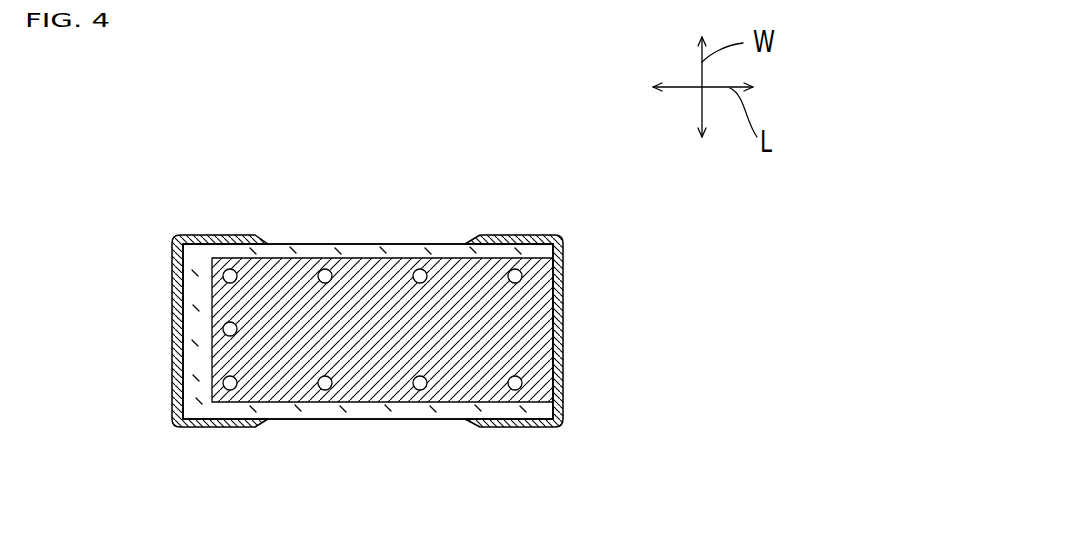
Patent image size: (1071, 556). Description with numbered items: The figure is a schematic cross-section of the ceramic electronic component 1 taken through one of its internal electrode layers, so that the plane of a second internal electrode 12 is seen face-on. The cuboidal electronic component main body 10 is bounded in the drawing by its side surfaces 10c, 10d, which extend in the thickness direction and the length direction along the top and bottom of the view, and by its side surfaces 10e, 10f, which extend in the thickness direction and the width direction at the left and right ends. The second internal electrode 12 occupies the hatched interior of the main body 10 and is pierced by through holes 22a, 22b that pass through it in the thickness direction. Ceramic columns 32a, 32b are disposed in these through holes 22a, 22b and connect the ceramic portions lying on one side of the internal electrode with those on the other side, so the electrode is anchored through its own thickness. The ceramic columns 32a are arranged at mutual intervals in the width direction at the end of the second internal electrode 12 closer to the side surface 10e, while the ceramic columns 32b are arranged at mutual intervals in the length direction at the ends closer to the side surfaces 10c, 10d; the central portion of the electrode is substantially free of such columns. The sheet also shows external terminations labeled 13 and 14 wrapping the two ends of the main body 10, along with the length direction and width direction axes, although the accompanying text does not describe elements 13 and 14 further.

The ceramic electronic component 1 is at (483, 210).
The electronic component main body 10 is at (363, 316).
The side surface 10c is at (350, 243).
The side surface 10d is at (250, 422).
The side surface 10e is at (177, 288).
The side surface 10f is at (562, 290).
The second internal electrode 12 is at (238, 247).
The first external electrode 13 is at (173, 330).
The second external electrode 14 is at (562, 357).
The through hole 22a is at (222, 376).
The through hole 22b is at (408, 400).
The ceramic column 32a is at (217, 277).
The ceramic column 32b is at (322, 407).